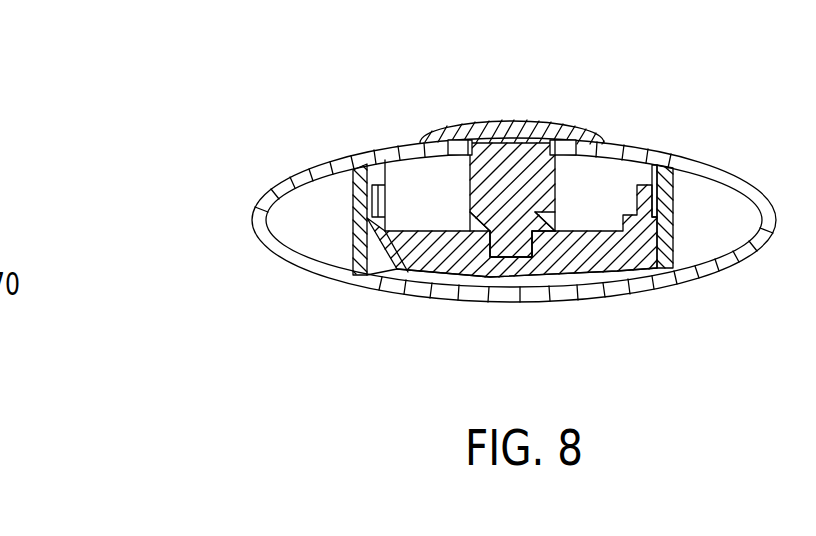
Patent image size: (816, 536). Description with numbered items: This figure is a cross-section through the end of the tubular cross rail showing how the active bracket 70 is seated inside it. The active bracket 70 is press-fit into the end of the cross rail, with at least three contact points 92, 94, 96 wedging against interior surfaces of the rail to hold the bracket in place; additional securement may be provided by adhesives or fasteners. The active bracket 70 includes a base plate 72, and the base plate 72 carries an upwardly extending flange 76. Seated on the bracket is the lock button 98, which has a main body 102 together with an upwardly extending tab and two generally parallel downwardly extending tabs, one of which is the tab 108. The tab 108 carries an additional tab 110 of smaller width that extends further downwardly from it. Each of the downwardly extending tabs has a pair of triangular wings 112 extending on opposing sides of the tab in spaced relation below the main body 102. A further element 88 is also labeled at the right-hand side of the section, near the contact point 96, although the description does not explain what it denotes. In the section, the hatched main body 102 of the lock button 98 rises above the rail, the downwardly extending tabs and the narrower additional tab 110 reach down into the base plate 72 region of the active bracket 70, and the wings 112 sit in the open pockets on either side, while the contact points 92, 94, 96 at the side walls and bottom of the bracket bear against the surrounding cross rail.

The active bracket 70 is at (660, 113).
The base plate 72 is at (447, 262).
The upwardly extending flange 76 is at (586, 237).
The retaining clip 88 is at (558, 221).
The contact point 92 is at (357, 210).
The contact point 94 is at (515, 247).
The contact point 96 is at (654, 223).
The lock button 98 is at (490, 121).
The main body 102 is at (541, 128).
The downwardly extending tab 108 is at (472, 198).
The additional tab 110 is at (519, 251).
The triangular wings 112 is at (467, 160).